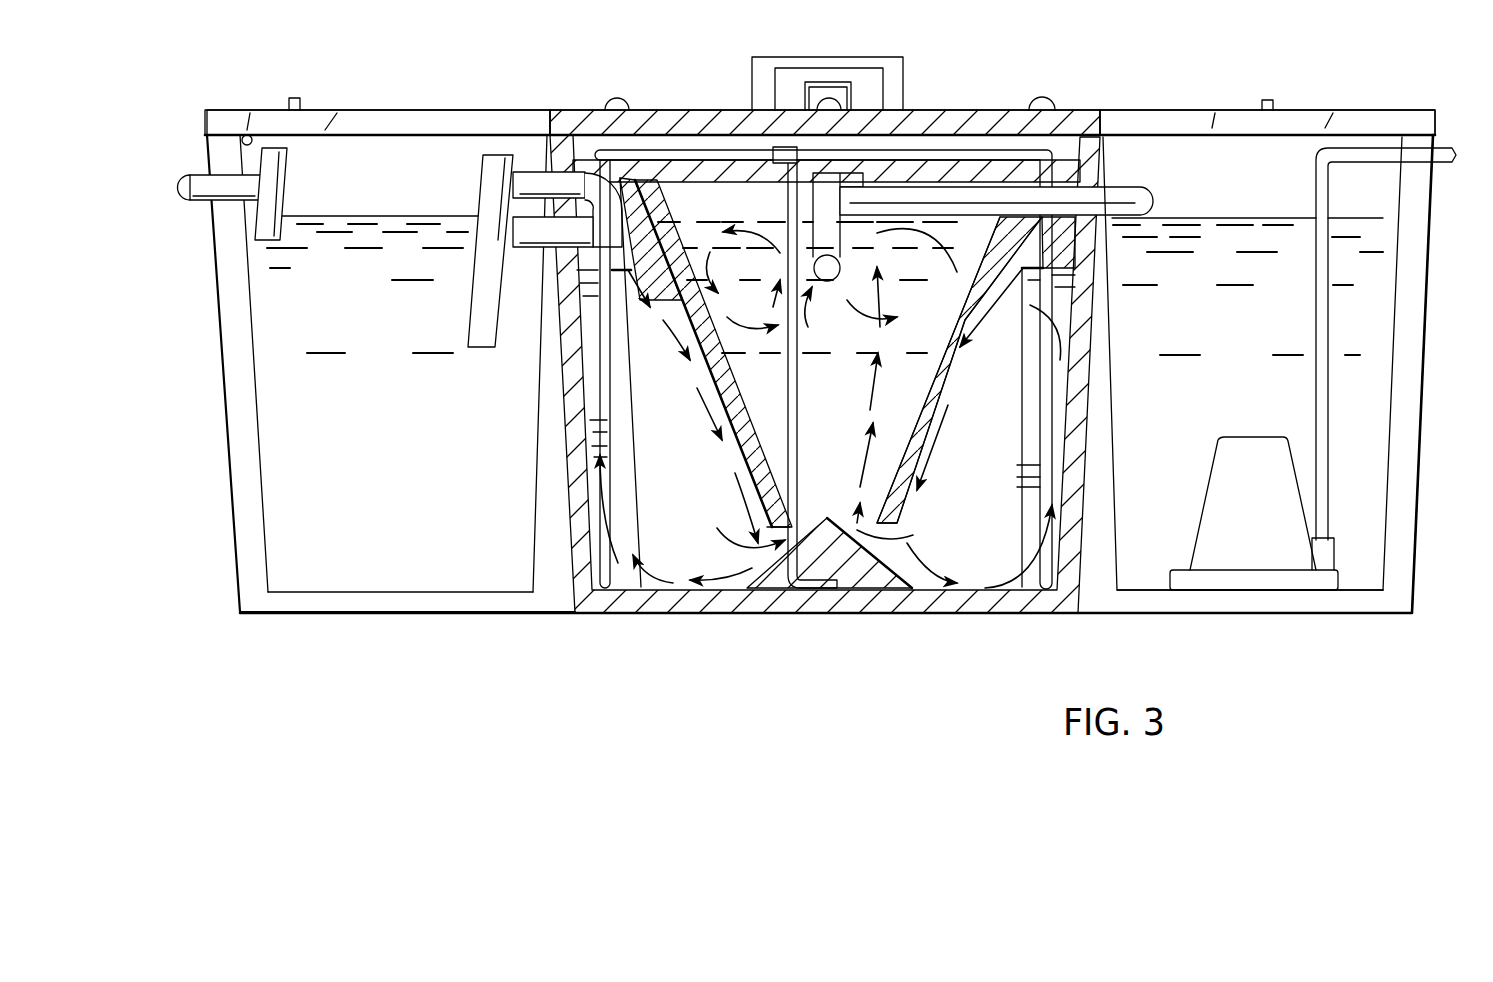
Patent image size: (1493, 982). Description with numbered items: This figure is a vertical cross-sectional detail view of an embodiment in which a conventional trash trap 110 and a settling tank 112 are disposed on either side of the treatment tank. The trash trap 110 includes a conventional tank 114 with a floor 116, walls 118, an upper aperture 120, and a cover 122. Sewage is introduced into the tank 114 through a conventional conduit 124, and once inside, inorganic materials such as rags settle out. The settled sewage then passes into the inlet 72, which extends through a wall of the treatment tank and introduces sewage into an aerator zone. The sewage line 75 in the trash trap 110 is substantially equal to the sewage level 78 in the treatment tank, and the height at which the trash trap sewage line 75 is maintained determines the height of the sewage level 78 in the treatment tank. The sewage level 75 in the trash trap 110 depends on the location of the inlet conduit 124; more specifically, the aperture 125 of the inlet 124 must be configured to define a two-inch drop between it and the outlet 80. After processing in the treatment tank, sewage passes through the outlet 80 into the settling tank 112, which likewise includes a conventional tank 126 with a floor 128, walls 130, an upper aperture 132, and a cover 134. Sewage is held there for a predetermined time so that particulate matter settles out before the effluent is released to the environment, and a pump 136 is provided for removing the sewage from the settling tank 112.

The trash trap 110 is at (460, 65).
The settling tank 112 is at (1243, 70).
The tank 114 is at (243, 572).
The floor 116 is at (402, 592).
The walls 118 is at (256, 315).
The upper aperture 120 is at (250, 140).
The cover 122 is at (480, 110).
The conduit 124 is at (195, 176).
The aperture 125 is at (350, 284).
The tank 126 is at (1422, 410).
The floor 128 is at (1133, 588).
The walls 130 is at (1393, 283).
The upper aperture 132 is at (1393, 147).
The cover 134 is at (1367, 113).
The pump 136 is at (1228, 438).
The inlet 72 is at (652, 201).
The sewage line 75 is at (330, 215).
The sewage level 78 is at (740, 198).
The outlet 80 is at (1140, 187).